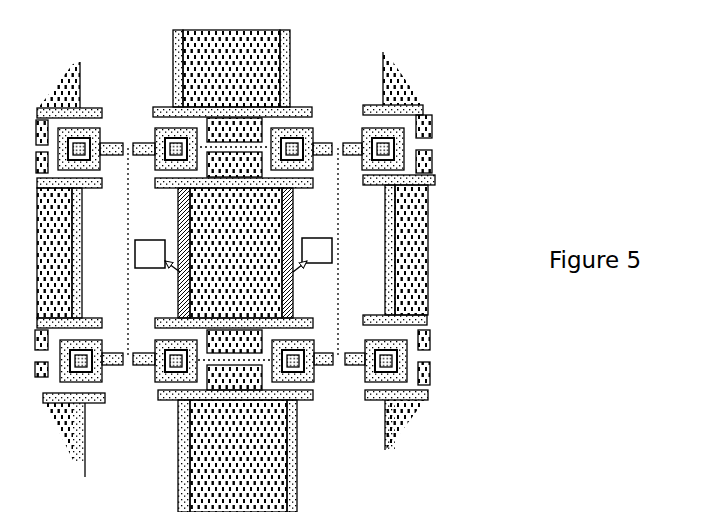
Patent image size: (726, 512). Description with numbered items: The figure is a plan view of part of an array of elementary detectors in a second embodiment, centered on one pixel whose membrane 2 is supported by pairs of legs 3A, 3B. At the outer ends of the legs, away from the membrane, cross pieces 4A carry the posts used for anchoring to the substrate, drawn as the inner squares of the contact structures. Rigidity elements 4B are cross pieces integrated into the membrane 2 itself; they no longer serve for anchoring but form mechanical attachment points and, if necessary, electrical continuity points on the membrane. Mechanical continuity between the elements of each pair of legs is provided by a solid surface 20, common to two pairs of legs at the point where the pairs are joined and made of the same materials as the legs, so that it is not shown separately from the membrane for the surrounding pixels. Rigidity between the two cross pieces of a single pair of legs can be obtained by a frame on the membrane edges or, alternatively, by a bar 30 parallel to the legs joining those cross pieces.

The membrane 2 is at (258, 292).
The pair of legs 3A is at (132, 196).
The pair of legs 3B is at (154, 214).
The cross pieces 4A is at (277, 175).
The rigidity elements 4B is at (280, 207).
The solid surface 20 is at (187, 276).
The bar 30 is at (188, 244).